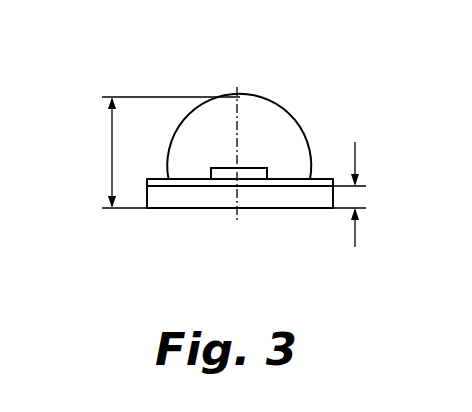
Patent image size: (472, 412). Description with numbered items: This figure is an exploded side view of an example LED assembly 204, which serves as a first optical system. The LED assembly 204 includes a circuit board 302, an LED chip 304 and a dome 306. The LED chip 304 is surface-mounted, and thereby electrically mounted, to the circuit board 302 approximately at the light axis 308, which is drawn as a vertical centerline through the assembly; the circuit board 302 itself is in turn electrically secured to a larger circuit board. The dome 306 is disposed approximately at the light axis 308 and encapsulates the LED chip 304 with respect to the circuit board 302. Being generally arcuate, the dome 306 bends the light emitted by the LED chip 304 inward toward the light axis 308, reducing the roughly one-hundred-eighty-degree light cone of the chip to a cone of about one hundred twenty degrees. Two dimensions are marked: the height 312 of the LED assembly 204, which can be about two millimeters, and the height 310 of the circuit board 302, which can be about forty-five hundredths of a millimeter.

The LED assembly 204 is at (193, 69).
The circuit board 302 is at (170, 209).
The LED chip 304 is at (220, 172).
The dome 306 is at (296, 125).
The light axis 308 is at (236, 110).
The height of the circuit board 310 is at (360, 194).
The height of the LED assembly 312 is at (158, 152).